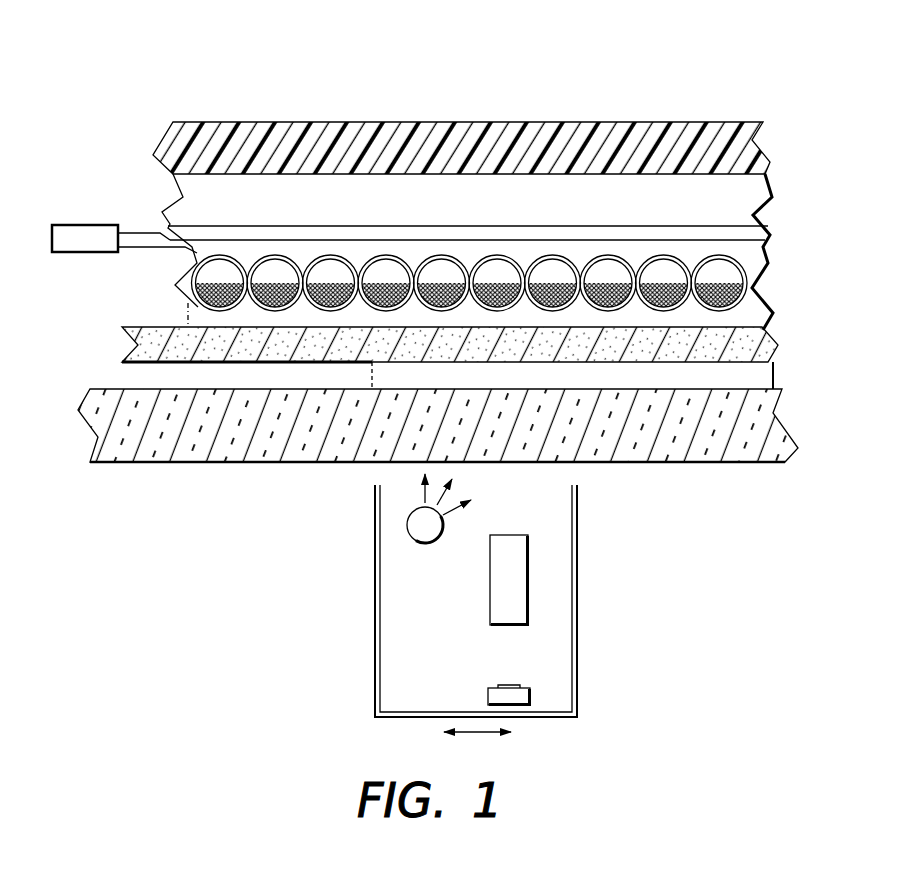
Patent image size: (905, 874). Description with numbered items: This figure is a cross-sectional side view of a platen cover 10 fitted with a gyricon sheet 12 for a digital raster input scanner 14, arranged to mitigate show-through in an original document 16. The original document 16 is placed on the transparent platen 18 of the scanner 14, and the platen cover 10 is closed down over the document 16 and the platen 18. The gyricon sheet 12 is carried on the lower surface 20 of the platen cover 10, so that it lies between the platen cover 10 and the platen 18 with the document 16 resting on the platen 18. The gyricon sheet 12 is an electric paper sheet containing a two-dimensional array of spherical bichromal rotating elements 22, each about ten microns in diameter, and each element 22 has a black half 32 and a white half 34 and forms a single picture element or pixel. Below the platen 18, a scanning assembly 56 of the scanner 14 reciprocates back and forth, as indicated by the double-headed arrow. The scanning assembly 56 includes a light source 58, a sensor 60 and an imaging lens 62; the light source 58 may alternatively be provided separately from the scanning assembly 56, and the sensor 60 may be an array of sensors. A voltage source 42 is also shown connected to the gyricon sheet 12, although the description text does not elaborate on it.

The platen cover 10 is at (727, 71).
The gyricon sheet 12 is at (772, 287).
The digital raster input scanner 14 is at (337, 622).
The original document 16 is at (760, 378).
The transparent platen 18 is at (780, 433).
The lower surface 20 is at (770, 341).
The spherical bichromal rotating elements 22 is at (737, 263).
The black half 32 is at (197, 304).
The white half 34 is at (197, 268).
The voltage source 42 is at (124, 239).
The scanning assembly 56 is at (577, 702).
The light source 58 is at (415, 537).
The sensor 60 is at (528, 700).
The imaging lens 62 is at (522, 572).